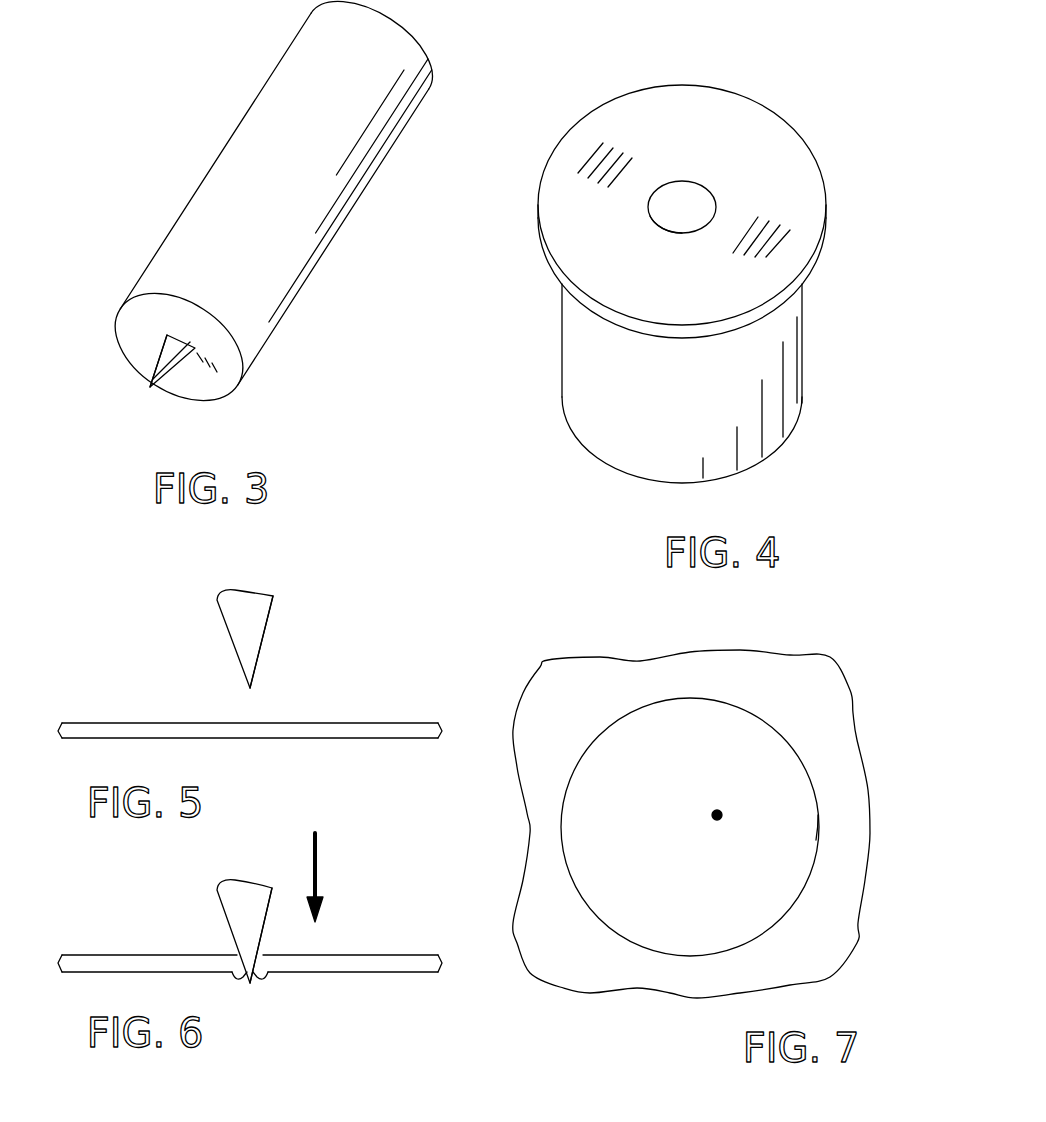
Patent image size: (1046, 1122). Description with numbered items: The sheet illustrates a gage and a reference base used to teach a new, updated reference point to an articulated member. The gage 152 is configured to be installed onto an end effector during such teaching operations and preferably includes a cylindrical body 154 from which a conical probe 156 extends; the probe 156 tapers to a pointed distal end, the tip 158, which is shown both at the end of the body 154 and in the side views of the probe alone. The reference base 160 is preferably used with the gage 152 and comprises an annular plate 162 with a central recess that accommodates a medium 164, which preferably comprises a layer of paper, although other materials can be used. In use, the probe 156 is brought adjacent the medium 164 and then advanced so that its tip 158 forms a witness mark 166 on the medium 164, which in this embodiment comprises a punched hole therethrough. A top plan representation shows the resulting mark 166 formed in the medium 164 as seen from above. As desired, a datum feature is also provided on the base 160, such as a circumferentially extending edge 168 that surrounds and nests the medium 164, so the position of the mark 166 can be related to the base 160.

In FIG. 3, the gage 152 is at (248, 227).
In FIG. 3, the cylindrical body 154 is at (287, 110).
In FIG. 3, the conical probe 156 is at (165, 353).
In FIG. 5, the conical probe 156 is at (257, 635).
In FIG. 6, the conical probe 156 is at (242, 907).
In FIG. 3, the cutting edge / tip 158 is at (150, 387).
In FIG. 5, the cutting edge / tip 158 is at (250, 694).
In FIG. 6, the cutting edge / tip 158 is at (250, 983).
In FIG. 4, the reference base 160 is at (682, 251).
In FIG. 7, the reference base 160 is at (578, 627).
In FIG. 4, the annular plate 162 is at (643, 107).
In FIG. 4, the medium 164 is at (685, 193).
In FIG. 5, the medium 164 is at (337, 727).
In FIG. 6, the medium 164 is at (362, 960).
In FIG. 7, the medium 164 is at (750, 750).
In FIG. 6, the witness mark 166 is at (216, 943).
In FIG. 7, the witness mark 166 is at (705, 838).
In FIG. 4, the circumferentially extending edge 168 is at (648, 219).
In FIG. 7, the circumferentially extending edge 168 is at (818, 825).